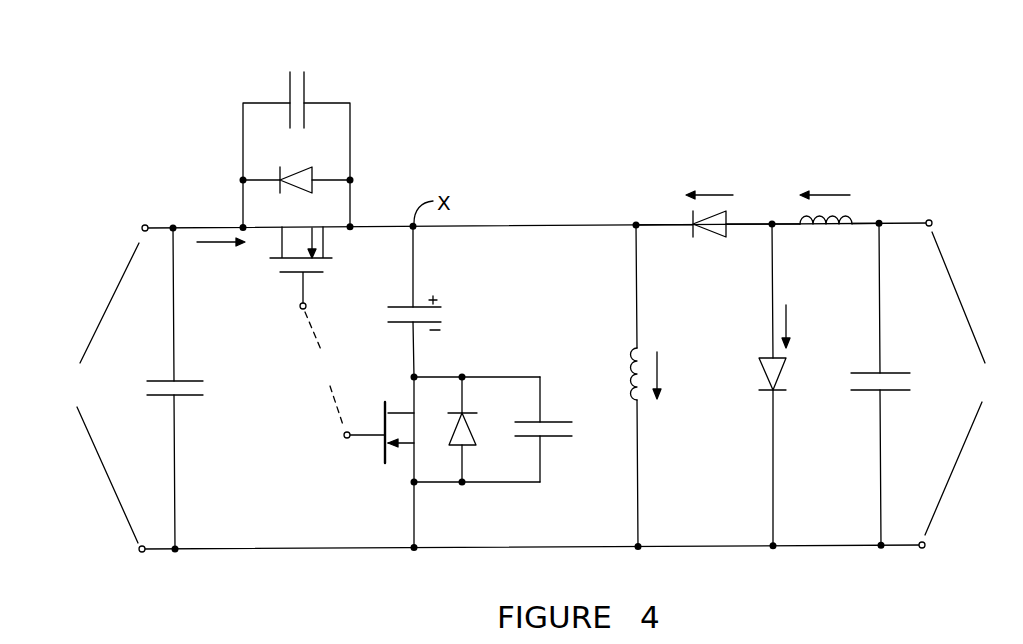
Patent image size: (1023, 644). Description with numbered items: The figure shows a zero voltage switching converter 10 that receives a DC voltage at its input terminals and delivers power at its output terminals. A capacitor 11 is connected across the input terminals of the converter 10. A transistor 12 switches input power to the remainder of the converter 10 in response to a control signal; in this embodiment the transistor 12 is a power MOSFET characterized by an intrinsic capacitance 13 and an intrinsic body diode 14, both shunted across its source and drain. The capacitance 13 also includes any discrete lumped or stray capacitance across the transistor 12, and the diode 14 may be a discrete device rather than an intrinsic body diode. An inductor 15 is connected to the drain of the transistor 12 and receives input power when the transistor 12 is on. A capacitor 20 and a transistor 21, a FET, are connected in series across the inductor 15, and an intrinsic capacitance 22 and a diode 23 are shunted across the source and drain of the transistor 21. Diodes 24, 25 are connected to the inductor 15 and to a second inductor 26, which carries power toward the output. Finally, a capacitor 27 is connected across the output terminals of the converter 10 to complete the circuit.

The zero voltage switching converter 10 is at (477, 140).
The capacitor 11 is at (152, 396).
The transistor 12 is at (318, 275).
The intrinsic capacitance 13 is at (305, 86).
The intrinsic body diode 14 is at (291, 170).
The inductor 15 is at (619, 372).
The capacitor 20 is at (398, 324).
The transistor 21 is at (383, 460).
The intrinsic capacitance 22 is at (553, 438).
The diode 23 is at (477, 425).
The diode 24 is at (708, 240).
The diode 25 is at (788, 368).
The second inductor 26 is at (827, 233).
The capacitor 27 is at (866, 395).